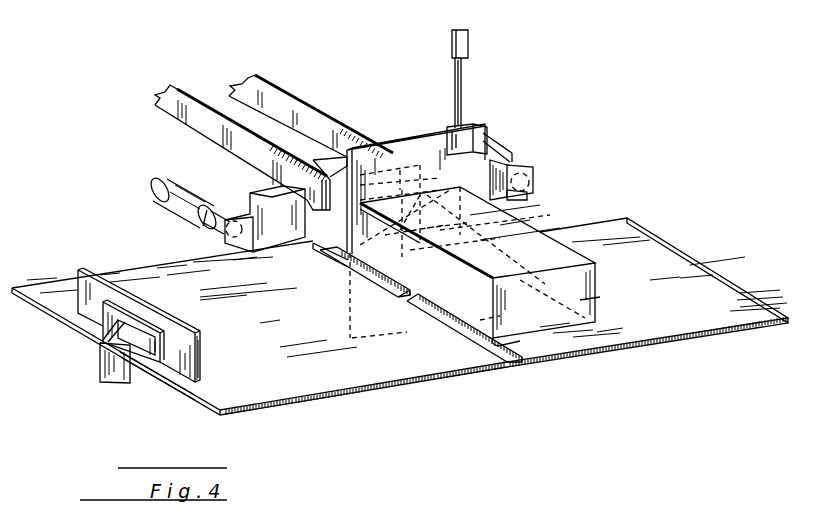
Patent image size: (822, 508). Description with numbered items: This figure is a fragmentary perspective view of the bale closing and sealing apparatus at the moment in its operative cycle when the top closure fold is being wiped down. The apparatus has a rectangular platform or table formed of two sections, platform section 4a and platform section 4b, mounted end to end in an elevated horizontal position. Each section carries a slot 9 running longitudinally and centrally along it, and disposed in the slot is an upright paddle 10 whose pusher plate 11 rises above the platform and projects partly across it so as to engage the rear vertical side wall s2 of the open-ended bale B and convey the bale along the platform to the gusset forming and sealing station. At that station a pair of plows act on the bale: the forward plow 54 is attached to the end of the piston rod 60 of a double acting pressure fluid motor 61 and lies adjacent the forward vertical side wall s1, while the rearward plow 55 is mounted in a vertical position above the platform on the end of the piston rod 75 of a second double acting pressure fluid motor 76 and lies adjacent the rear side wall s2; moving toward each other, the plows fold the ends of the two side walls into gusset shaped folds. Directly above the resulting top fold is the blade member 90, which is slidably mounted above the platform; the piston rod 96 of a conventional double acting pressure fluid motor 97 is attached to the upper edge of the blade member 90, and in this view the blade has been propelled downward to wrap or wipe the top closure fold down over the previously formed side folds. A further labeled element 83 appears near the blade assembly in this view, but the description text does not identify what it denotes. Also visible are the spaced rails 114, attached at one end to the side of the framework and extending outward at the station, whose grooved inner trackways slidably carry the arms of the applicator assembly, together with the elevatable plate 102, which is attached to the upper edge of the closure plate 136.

The slot 9 is at (275, 352).
The platform section 4a is at (293, 324).
The platform section 4b is at (698, 294).
The upright paddle 10 is at (90, 356).
The pusher plate 11 is at (92, 304).
The forward plow 54 is at (539, 179).
The rearward plow 55 is at (222, 232).
The piston rod 60 is at (514, 173).
The double acting pressure fluid motor 61 is at (496, 137).
The piston rod 75 is at (212, 211).
The double acting pressure fluid motor 76 is at (159, 189).
The pin 83 is at (422, 195).
The blade member 90 is at (426, 136).
The piston rod 96 is at (456, 74).
The double acting pressure fluid motor 97 is at (470, 38).
The elevatable plate 102 is at (322, 256).
The rails 114 is at (160, 100).
The closure plate 136 is at (350, 292).
The bale B is at (477, 262).
The forward vertical side wall s1 is at (612, 290).
The rear vertical side wall s2 is at (525, 342).